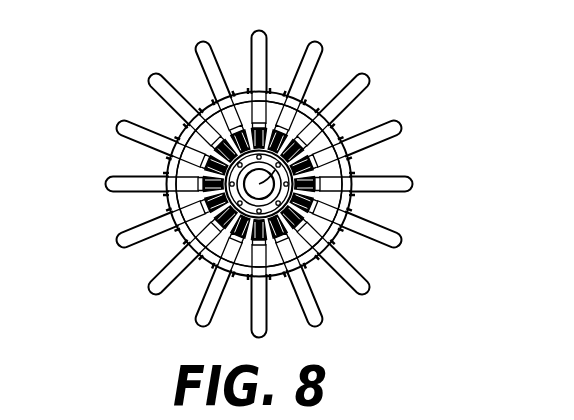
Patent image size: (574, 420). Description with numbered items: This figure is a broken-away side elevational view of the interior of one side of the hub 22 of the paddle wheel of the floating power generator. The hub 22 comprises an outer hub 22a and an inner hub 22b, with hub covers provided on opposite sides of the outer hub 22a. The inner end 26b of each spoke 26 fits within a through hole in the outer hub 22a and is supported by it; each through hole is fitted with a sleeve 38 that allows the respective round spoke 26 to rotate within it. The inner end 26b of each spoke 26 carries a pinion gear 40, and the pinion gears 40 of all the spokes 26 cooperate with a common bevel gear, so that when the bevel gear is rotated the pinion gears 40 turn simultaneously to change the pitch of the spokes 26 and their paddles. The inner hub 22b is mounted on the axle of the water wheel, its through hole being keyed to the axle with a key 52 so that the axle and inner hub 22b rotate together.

The hub 22 is at (357, 203).
The outer hub 22a is at (337, 234).
The inner hub 22b is at (345, 137).
The spoke 26 is at (160, 79).
The inner end of spoke 26b is at (178, 163).
The sleeve 38 is at (170, 211).
The pinion gear 40 is at (158, 262).
The key 52 is at (345, 173).